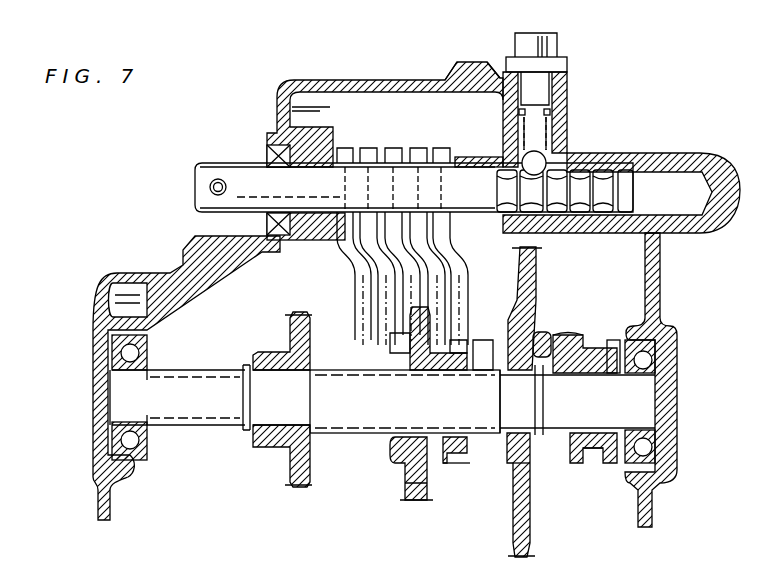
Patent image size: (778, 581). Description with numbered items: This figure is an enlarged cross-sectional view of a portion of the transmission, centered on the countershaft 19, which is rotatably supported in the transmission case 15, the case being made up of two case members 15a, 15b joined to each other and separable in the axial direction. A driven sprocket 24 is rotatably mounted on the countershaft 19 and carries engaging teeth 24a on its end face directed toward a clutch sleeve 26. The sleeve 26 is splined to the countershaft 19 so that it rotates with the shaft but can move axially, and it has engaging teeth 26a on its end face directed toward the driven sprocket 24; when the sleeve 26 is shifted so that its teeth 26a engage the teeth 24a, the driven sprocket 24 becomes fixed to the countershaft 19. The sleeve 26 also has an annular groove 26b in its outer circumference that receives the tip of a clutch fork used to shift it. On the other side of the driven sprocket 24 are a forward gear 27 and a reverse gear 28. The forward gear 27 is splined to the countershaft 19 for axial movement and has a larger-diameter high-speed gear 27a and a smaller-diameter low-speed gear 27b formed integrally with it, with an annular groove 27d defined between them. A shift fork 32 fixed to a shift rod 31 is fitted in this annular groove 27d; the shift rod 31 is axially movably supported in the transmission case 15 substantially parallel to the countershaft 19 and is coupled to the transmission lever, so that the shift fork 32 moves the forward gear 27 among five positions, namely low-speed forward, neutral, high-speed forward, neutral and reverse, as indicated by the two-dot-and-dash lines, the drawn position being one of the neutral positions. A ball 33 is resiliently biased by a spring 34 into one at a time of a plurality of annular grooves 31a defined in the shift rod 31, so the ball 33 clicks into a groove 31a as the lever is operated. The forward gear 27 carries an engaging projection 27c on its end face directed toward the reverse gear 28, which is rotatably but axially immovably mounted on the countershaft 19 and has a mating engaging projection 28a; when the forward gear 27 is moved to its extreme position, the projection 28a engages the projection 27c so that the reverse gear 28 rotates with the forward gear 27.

The transmission case 15 is at (318, 80).
The case member 15a is at (452, 72).
The case member 15b is at (478, 62).
The countershaft 19 is at (192, 422).
The driven sprocket 24 is at (527, 533).
The engaging teeth 24a is at (517, 457).
The sleeve 26 is at (608, 345).
The engaging teeth 26a is at (566, 333).
The annular groove 26b is at (587, 457).
The forward gear 27 is at (431, 503).
The high-speed gear 27a is at (407, 505).
The low-speed gear 27b is at (457, 463).
The engaging projection 27c is at (392, 453).
The annular groove 27d is at (433, 436).
The reverse gear 28 is at (293, 445).
The engaging projection 28a is at (312, 468).
The shift rod 31 is at (245, 170).
The annular grooves 31a is at (518, 200).
The shift fork 32 is at (416, 150).
The ball 33 is at (548, 165).
The spring 34 is at (550, 110).